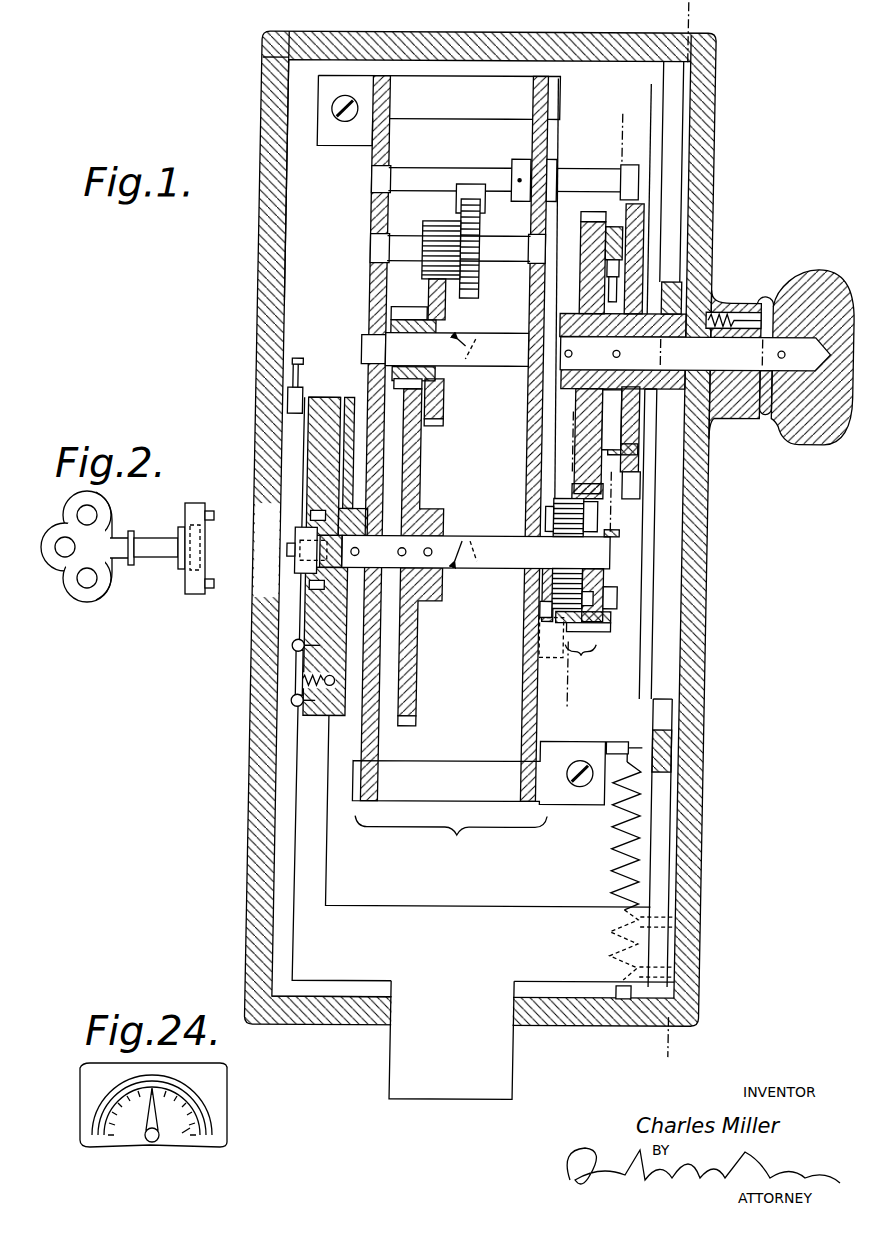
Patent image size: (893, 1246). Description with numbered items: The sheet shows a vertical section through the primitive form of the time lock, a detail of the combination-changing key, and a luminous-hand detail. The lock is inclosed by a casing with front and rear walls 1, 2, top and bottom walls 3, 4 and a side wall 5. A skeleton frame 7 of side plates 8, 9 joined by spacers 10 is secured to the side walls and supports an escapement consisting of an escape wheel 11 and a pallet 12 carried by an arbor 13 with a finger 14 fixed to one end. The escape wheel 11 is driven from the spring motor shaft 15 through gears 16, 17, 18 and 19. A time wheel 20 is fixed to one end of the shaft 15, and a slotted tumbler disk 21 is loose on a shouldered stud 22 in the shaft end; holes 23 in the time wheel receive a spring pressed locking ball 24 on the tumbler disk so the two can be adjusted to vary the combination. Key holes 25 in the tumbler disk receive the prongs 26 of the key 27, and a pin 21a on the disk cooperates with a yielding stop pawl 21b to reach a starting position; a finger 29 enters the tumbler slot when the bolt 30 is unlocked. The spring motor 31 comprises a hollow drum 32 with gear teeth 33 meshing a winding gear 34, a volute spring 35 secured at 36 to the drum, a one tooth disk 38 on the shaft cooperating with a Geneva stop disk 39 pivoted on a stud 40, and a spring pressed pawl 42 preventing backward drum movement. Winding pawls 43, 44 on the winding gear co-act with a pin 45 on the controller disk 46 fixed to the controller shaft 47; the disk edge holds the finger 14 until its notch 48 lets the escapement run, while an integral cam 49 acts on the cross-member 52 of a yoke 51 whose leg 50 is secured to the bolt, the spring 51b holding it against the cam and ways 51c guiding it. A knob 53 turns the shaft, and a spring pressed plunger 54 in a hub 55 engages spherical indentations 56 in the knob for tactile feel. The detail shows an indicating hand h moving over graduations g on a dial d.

In FIG. 1, the front wall 1 is at (715, 70).
In FIG. 24, the front wall 1 is at (92, 1082).
In FIG. 1, the rear wall 2 is at (262, 73).
In FIG. 1, the top wall 3 is at (715, 5).
In FIG. 1, the bottom wall 4 is at (500, 172).
In FIG. 1, the side wall 5 is at (598, 432).
In FIG. 1, the skeleton frame 7 is at (450, 839).
In FIG. 1, the side plate 8 is at (390, 746).
In FIG. 1, the side plate 9 is at (533, 746).
In FIG. 1, the spacers 10 is at (461, 439).
In FIG. 1, the escape wheel 11 is at (483, 282).
In FIG. 1, the pallet 12 is at (470, 185).
In FIG. 1, the arbor 13 is at (604, 182).
In FIG. 1, the finger 14 is at (637, 172).
In FIG. 1, the spring motor shaft 15 is at (467, 568).
In FIG. 1, the gear 16 is at (428, 452).
In FIG. 1, the gear 17 is at (416, 313).
In FIG. 1, the gear 18 is at (487, 332).
In FIG. 1, the gear 19 is at (432, 222).
In FIG. 1, the time wheel 20 is at (341, 668).
In FIG. 1, the slotted tumbler disk 21 is at (312, 646).
In FIG. 1, the pin 21a is at (303, 549).
In FIG. 1, the yielding stop pawl 21b is at (312, 397).
In FIG. 1, the shouldered stud 22 is at (335, 553).
In FIG. 1, the holes 23 is at (346, 684).
In FIG. 1, the spring pressed impositive locking ball 24 is at (312, 702).
In FIG. 1, the key holes 25 is at (320, 508).
In FIG. 2, the prongs 26 is at (212, 581).
In FIG. 2, the key 27 is at (147, 540).
In FIG. 1, the finger 29 is at (309, 828).
In FIG. 1, the bolt 30 is at (452, 1022).
In FIG. 1, the spring motor 31 is at (570, 648).
In FIG. 1, the hollow drum 32 is at (618, 562).
In FIG. 1, the gear teeth 33 is at (620, 630).
In FIG. 1, the winding gear 34 is at (611, 426).
In FIG. 1, the volute spring 35 is at (548, 522).
In FIG. 1, the spring attachment point 36 is at (566, 510).
In FIG. 1, the one tooth disk 38 is at (622, 540).
In FIG. 1, the Geneva stop disk 39 is at (626, 608).
In FIG. 1, the stud 40 is at (626, 592).
In FIG. 1, the spring pressed pawl 42 is at (556, 627).
In FIG. 1, the winding pawl 43 is at (567, 497).
In FIG. 1, the winding pawl 44 is at (622, 242).
In FIG. 1, the pin 45 is at (622, 470).
In FIG. 1, the controller disk 46 is at (645, 250).
In FIG. 1, the controller shaft 47 is at (695, 352).
In FIG. 1, the notch 48 is at (647, 498).
In FIG. 1, the cam 49 is at (738, 315).
In FIG. 1, the leg 50 is at (642, 866).
In FIG. 1, the yoke 51 is at (676, 722).
In FIG. 1, the spring 51b is at (625, 897).
In FIG. 1, the ways 51c is at (680, 124).
In FIG. 1, the cross-member 52 is at (672, 296).
In FIG. 1, the knob 53 is at (838, 282).
In FIG. 1, the spring pressed plunger 54 is at (790, 295).
In FIG. 1, the hub 55 is at (736, 402).
In FIG. 1, the spherical indentations 56 is at (772, 414).
In FIG. 24, the graduations g is at (124, 1133).
In FIG. 24, the indicating hand h is at (157, 1142).
In FIG. 24, the dial d is at (185, 1132).